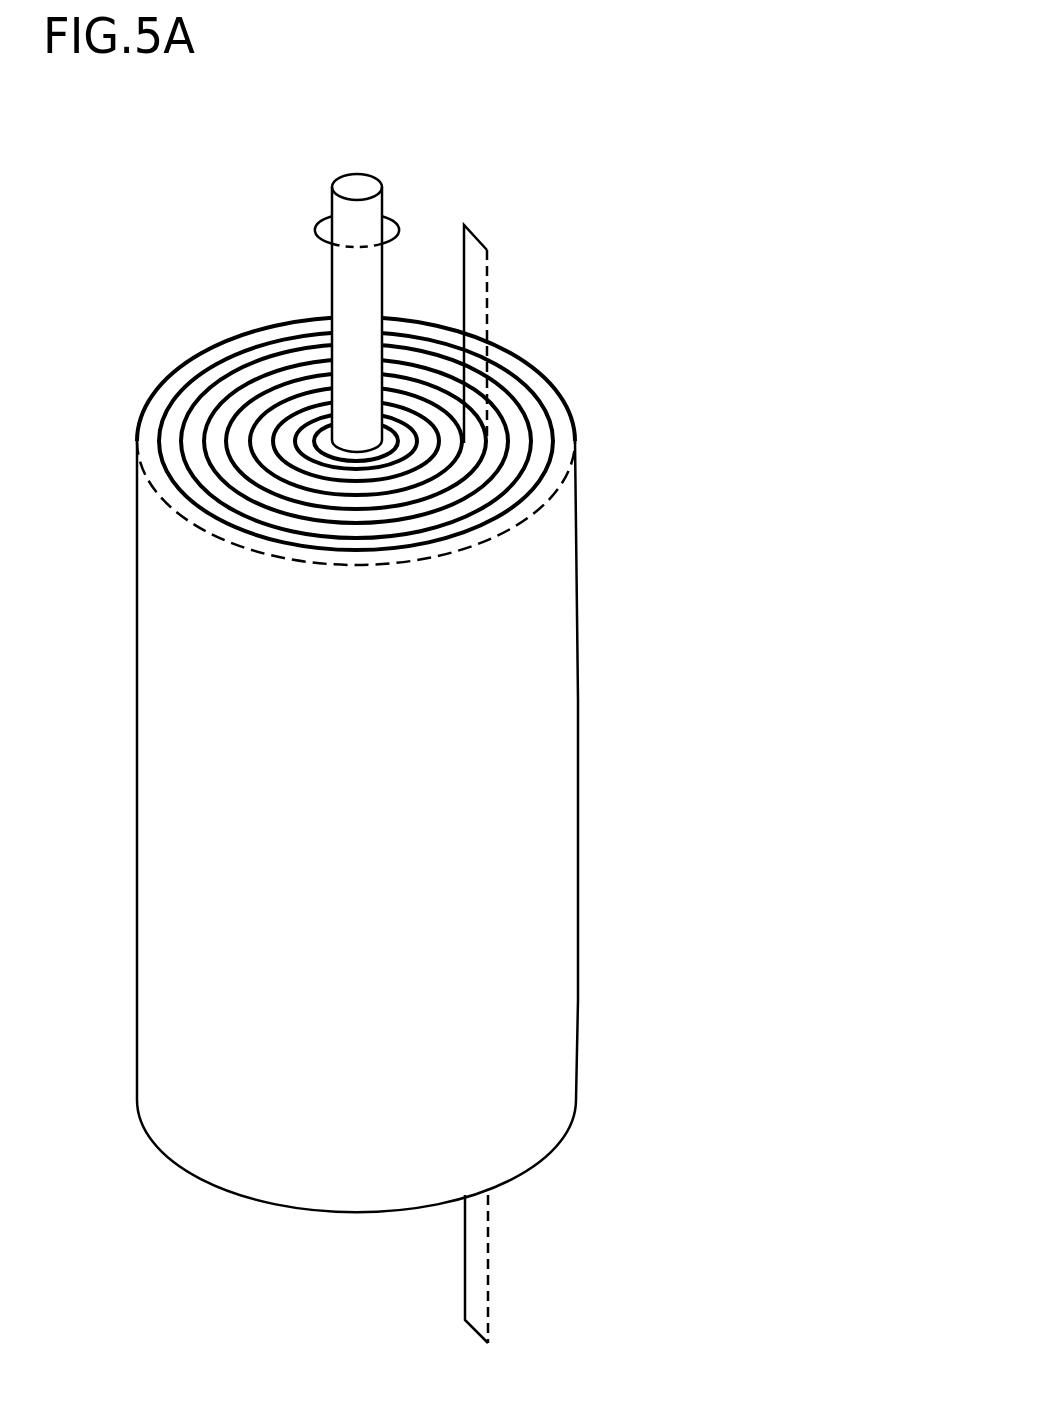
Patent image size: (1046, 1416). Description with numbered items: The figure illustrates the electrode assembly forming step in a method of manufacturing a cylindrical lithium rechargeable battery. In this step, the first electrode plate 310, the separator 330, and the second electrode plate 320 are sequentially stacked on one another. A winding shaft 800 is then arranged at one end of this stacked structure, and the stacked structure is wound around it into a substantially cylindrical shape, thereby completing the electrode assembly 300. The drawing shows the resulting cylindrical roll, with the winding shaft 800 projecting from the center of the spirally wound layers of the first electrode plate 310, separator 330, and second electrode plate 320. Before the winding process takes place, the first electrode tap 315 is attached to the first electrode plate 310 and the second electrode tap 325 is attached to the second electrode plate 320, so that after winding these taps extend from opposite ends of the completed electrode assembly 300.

The electrode assembly 300 is at (700, 762).
The first electrode plate 310 is at (548, 400).
The second electrode plate 320 is at (590, 484).
The separator 330 is at (548, 441).
The first electrode tap 315 is at (487, 284).
The second electrode tap 325 is at (473, 1253).
The winding shaft 800 is at (372, 172).